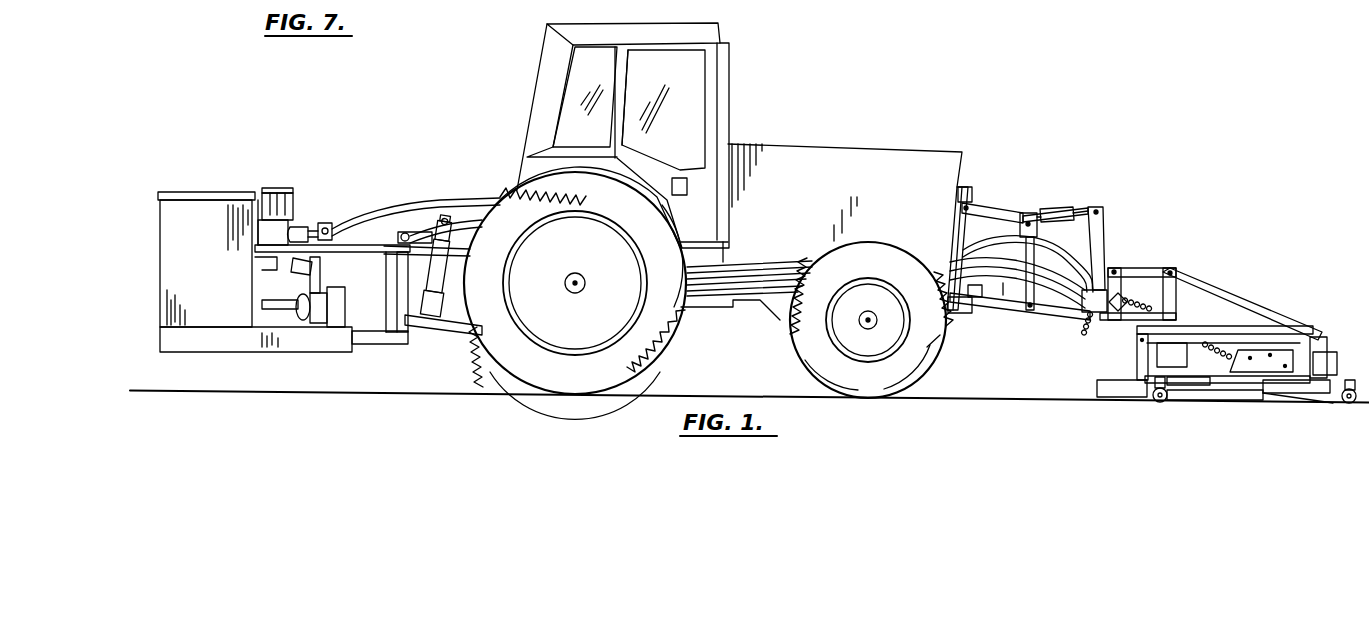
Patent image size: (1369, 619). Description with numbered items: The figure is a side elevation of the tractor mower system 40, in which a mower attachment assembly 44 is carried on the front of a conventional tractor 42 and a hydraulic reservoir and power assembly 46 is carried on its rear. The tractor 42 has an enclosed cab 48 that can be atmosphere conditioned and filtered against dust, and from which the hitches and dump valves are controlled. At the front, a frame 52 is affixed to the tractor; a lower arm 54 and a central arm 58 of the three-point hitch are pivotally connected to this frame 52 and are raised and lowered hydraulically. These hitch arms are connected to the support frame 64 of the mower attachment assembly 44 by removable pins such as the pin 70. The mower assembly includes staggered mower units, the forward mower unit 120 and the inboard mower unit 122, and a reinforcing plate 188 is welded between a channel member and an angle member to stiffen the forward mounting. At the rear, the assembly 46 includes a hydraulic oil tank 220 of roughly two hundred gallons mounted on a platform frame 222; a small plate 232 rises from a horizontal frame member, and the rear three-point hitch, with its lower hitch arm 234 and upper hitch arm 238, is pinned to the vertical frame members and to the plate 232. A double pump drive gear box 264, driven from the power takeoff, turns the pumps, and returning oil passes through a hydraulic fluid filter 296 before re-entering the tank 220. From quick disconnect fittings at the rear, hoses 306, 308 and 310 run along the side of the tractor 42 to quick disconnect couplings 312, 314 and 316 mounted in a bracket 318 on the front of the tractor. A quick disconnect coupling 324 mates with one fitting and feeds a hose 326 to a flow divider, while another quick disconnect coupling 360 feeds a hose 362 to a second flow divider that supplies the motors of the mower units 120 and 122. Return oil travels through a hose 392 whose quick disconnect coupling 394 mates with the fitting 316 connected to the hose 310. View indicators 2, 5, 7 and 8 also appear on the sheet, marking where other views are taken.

In FIG. 1, the tractor mower system 40 is at (1074, 124).
In FIG. 1, the tractor 42 is at (798, 141).
In FIG. 1, the mower attachment assembly 44 is at (1244, 260).
In FIG. 1, the hydraulic reservoir and power assembly 46 is at (236, 164).
In FIG. 1, the enclosed cab 48 is at (731, 92).
In FIG. 1, the frame 52 is at (962, 195).
In FIG. 1, the lower arm 54 is at (1017, 310).
In FIG. 1, the central arm 58 is at (1048, 209).
In FIG. 1, the support frame 64 is at (1101, 237).
In FIG. 1, the removable pin 70 is at (1105, 210).
In FIG. 1, the mower unit 120 is at (1223, 394).
In FIG. 1, the mower unit 122 is at (1133, 393).
In FIG. 1, the reinforcing plate 188 is at (1232, 300).
In FIG. 1, the hydraulic oil tank 220 is at (168, 243).
In FIG. 1, the platform frame 222 is at (201, 350).
In FIG. 1, the small plate 232 is at (406, 232).
In FIG. 1, the lower hitch arm 234 is at (458, 326).
In FIG. 1, the upper hitch arm 238 is at (458, 221).
In FIG. 1, the double pump drive gear box 264 is at (341, 302).
In FIG. 1, the hydraulic fluid filter 296 is at (278, 225).
In FIG. 7, the hose 306 is at (486, 15).
In FIG. 1, the hose 306 is at (707, 292).
In FIG. 1, the hose 308 is at (757, 291).
In FIG. 7, the hose 310 is at (441, 6).
In FIG. 1, the hose 310 is at (748, 267).
In FIG. 1, the quick disconnect coupling 312 is at (945, 250).
In FIG. 1, the quick disconnect coupling 314 is at (942, 268).
In FIG. 1, the quick disconnect coupling 316 is at (946, 240).
In FIG. 7, the bracket 318 is at (222, 0).
In FIG. 1, the bracket 318 is at (957, 232).
In FIG. 1, the quick disconnect coupling 324 is at (927, 347).
In FIG. 1, the hose 326 is at (1050, 298).
In FIG. 1, the quick disconnect coupling 360 is at (980, 290).
In FIG. 1, the hose 362 is at (1003, 285).
In FIG. 1, the hose 392 is at (1092, 252).
In FIG. 1, the quick disconnect coupling 394 is at (980, 230).
In FIG. 1, the section line 2- 2 is at (368, 157).
In FIG. 1, the section line 5- 5 is at (1002, 132).
In FIG. 1, the section line 7- 7 is at (783, 0).
In FIG. 1, the section line 8- 8 is at (1060, 197).